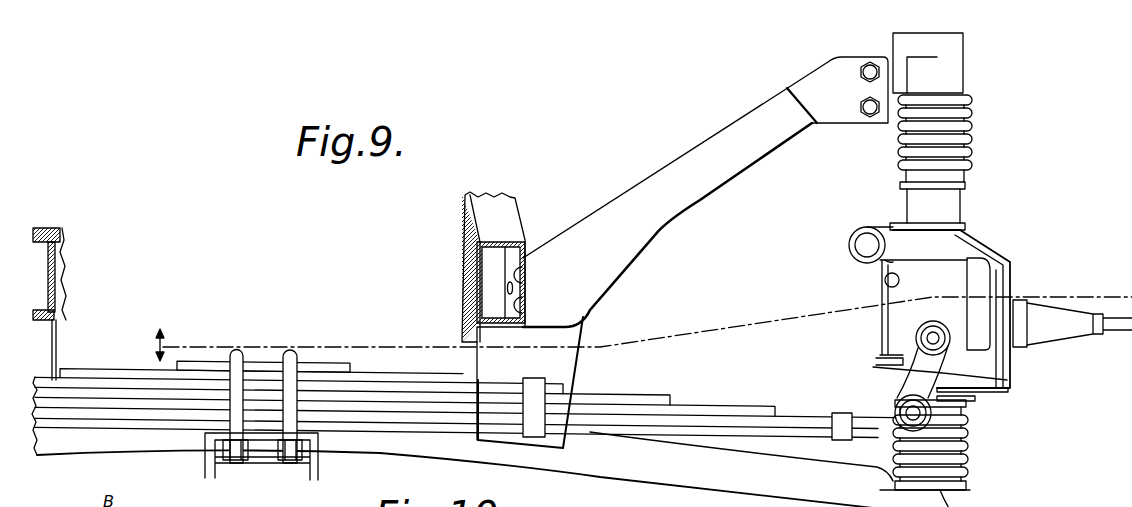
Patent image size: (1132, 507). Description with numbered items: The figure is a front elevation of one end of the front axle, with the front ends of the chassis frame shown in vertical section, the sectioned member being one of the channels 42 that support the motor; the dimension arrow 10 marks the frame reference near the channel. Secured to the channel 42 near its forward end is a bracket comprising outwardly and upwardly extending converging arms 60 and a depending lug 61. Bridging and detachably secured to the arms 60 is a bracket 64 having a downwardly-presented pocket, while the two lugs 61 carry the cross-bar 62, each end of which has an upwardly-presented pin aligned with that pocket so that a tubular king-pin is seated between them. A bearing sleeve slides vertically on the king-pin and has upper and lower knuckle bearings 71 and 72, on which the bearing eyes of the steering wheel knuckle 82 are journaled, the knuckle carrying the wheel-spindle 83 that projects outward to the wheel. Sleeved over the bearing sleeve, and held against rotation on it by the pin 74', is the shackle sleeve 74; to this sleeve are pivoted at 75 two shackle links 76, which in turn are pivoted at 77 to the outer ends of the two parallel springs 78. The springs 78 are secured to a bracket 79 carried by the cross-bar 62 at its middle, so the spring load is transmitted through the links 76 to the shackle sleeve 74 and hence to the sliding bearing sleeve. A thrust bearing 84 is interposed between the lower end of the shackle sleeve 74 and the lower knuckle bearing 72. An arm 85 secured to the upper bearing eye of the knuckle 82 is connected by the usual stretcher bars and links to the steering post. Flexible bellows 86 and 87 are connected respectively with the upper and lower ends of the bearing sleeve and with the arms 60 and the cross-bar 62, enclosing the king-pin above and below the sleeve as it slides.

The vehicle body 10 is at (144, 345).
The channel 42 is at (55, 277).
The converging arm 60 is at (677, 165).
The depending lug 61 is at (48, 358).
The cross-bar 62 is at (662, 477).
The bracket 64 is at (953, 48).
The upper knuckle bearing 71 is at (897, 222).
The lower knuckle bearing 72 is at (977, 400).
The shackle sleeve 74 is at (900, 312).
The pin 74' is at (861, 288).
The pivot 75 is at (917, 339).
The shackle link 76 is at (920, 373).
The pivot 77 is at (894, 410).
The spring 78 is at (758, 393).
The bracket 79 is at (310, 467).
The steering wheel knuckle 82 is at (1010, 265).
The wheel-spindle 83 is at (1093, 328).
The thrust bearing 84 is at (1008, 378).
The arm 85 is at (855, 248).
The flexible bellows 86 is at (970, 132).
The flexible bellows 87 is at (967, 455).